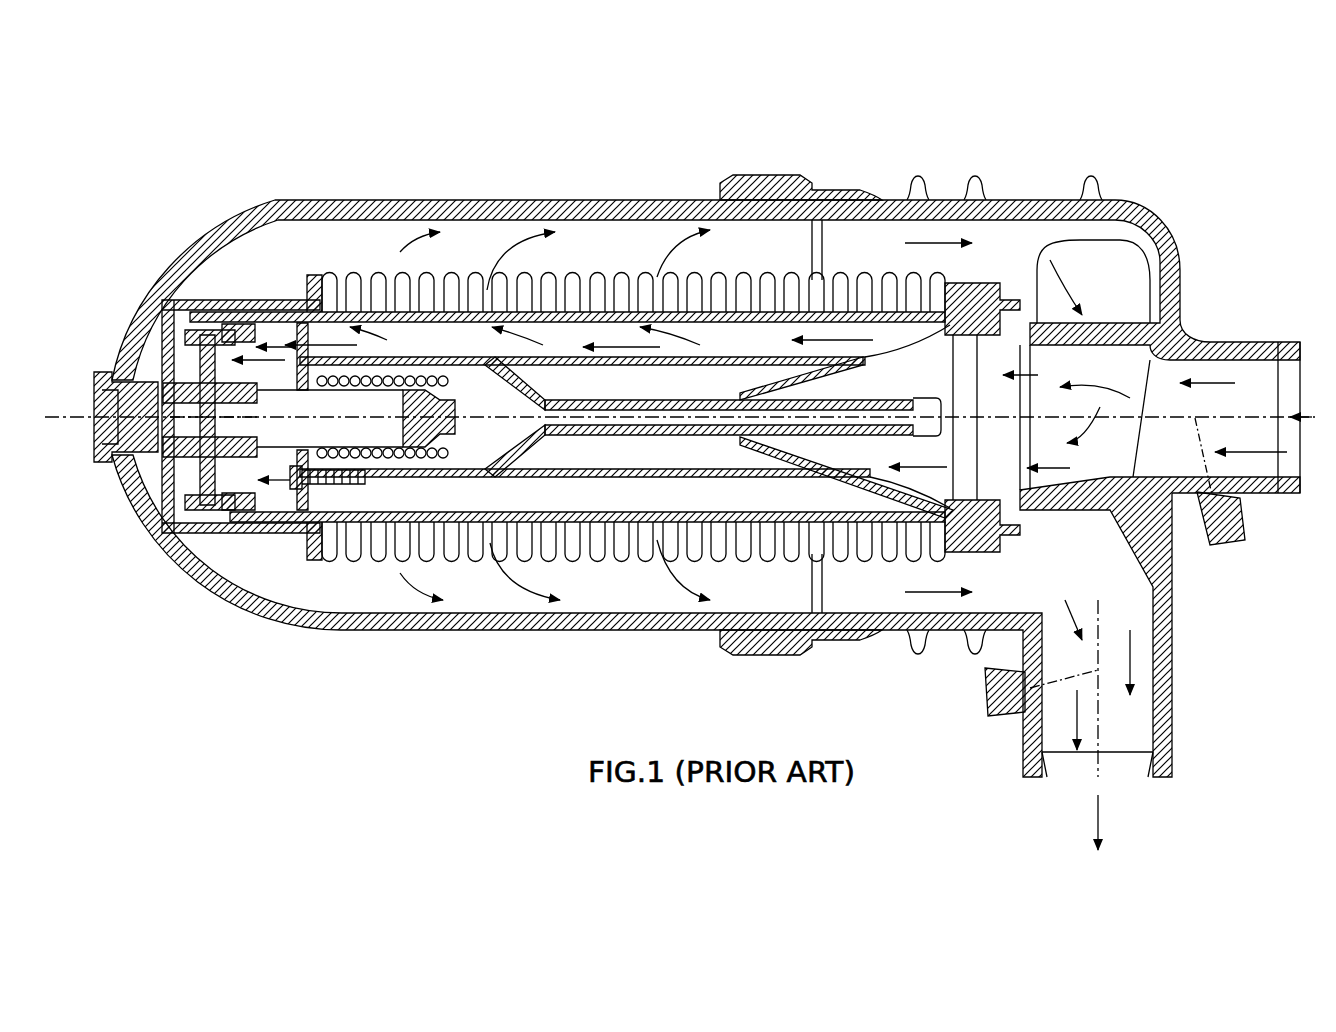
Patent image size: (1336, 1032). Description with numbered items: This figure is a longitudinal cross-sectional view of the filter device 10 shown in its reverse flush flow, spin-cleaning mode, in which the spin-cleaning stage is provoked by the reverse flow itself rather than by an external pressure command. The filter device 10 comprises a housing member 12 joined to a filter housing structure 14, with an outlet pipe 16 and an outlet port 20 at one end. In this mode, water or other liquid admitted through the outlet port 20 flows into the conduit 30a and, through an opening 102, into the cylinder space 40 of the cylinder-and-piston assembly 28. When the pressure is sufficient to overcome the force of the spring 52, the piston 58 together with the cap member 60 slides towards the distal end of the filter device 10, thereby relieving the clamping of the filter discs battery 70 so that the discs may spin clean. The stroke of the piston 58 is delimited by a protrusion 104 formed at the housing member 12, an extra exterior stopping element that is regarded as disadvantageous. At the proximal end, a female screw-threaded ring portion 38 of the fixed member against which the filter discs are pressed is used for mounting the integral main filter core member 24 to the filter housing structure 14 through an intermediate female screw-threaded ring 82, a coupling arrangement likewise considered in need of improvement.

The filter device 10 is at (680, 477).
The housing member 12 is at (193, 247).
The filter housing structure 14 is at (1157, 240).
The outlet pipe 16 is at (1170, 620).
The outlet port 20 is at (1208, 340).
The integral main filter core member 24 is at (625, 416).
The cylinder-and-piston assembly 28 is at (262, 283).
The conduit 30a is at (580, 337).
The female screw-threaded ring portion 38 is at (955, 540).
The cylinder space 40 is at (263, 473).
The spring 52 is at (403, 453).
The piston 58 is at (300, 330).
The cap member 60 is at (217, 537).
The filter discs battery 70 is at (330, 312).
The intermediate female screw-threaded ring 82 is at (960, 530).
The opening 102 is at (250, 345).
The protrusion 104 is at (150, 330).